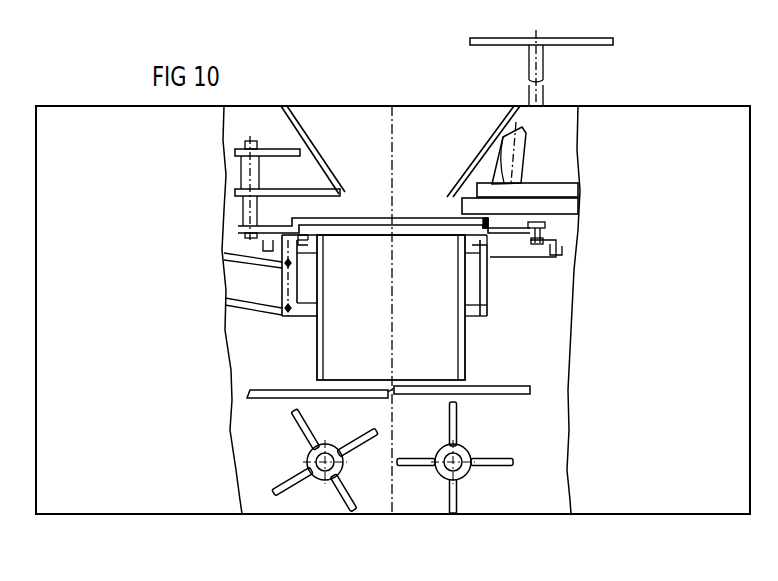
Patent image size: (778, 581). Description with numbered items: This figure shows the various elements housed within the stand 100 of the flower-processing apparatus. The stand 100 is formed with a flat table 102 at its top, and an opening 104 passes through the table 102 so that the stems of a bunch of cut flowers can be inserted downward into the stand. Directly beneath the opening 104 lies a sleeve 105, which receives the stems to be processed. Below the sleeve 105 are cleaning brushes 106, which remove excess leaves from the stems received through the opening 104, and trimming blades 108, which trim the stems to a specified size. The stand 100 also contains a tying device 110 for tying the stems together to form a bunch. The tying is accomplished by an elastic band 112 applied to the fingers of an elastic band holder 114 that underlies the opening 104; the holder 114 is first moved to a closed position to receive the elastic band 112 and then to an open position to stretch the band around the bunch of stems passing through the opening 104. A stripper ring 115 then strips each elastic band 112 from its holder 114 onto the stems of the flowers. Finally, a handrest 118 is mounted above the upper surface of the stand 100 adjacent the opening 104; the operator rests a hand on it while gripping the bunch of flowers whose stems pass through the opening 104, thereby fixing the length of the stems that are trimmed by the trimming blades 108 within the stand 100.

The stand 100 is at (649, 118).
The flat table 102 is at (563, 107).
The opening 104 is at (373, 102).
The sleeve 105 is at (313, 347).
The cleaning brushes 106 is at (298, 430).
The trimming blades 108 is at (282, 390).
The tying device 110 is at (553, 272).
The elastic band 112 is at (262, 218).
The elastic band holder 114 is at (292, 218).
The stripper ring 115 is at (320, 243).
The handrest 118 is at (555, 38).